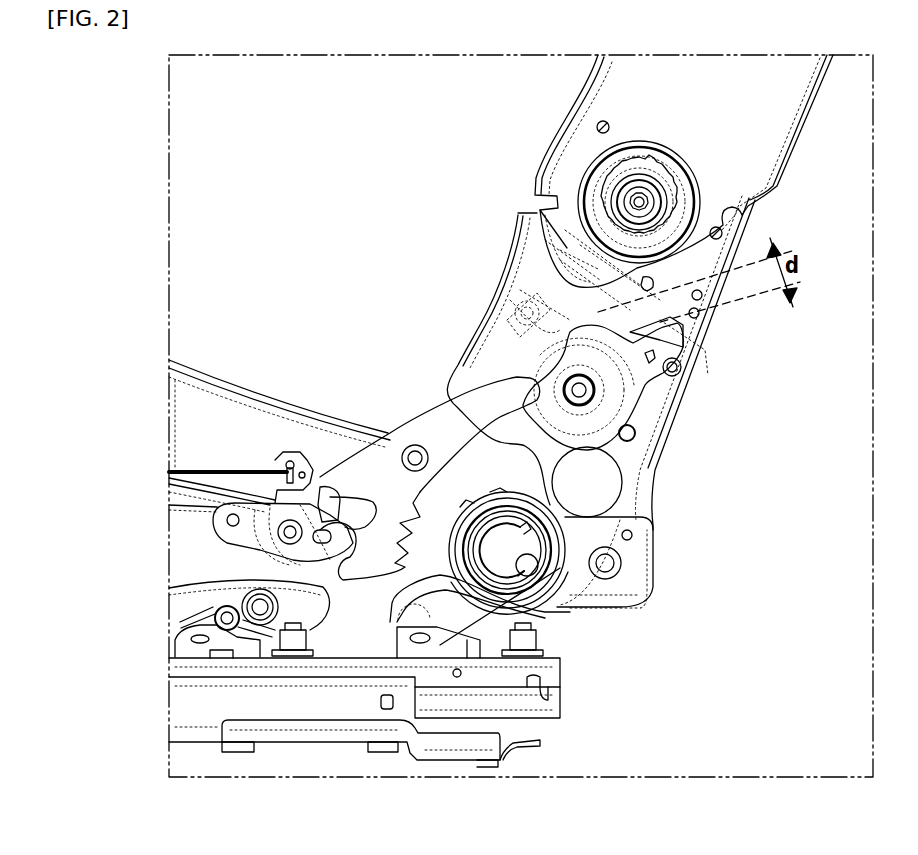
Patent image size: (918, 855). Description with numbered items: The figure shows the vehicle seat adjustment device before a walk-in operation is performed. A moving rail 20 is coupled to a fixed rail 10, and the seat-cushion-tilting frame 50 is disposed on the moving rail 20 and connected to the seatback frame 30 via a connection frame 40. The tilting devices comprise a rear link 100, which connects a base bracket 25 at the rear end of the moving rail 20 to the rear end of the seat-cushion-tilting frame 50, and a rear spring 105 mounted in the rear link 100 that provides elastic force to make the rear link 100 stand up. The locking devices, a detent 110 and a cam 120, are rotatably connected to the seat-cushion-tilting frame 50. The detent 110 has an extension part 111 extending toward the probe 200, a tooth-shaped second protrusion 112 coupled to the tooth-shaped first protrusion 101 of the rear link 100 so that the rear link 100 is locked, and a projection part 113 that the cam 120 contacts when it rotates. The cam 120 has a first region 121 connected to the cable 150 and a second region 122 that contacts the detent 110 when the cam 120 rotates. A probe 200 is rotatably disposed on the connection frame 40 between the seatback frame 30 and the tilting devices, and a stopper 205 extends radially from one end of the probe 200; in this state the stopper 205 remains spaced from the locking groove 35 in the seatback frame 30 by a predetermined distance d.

The fixed rail 10 is at (483, 748).
The moving rail 20 is at (547, 697).
The base bracket 25 is at (540, 650).
The seatback frame 30 is at (537, 208).
The locking groove 35 is at (520, 266).
The connection frame 40 is at (687, 393).
The seat-cushion-tilting frame 50 is at (460, 366).
The rear link 100 is at (337, 622).
The first protrusion 101 is at (437, 577).
The rear spring 105 is at (560, 547).
The detent 110 is at (411, 449).
The extension part 111 is at (458, 410).
The second protrusion 112 is at (395, 525).
The projection part 113 is at (313, 469).
The cam 120 is at (213, 519).
The first region 121 is at (280, 458).
The second region 122 is at (160, 588).
The cable 150 is at (217, 470).
The probe 200 is at (620, 423).
The stopper 205 is at (670, 330).